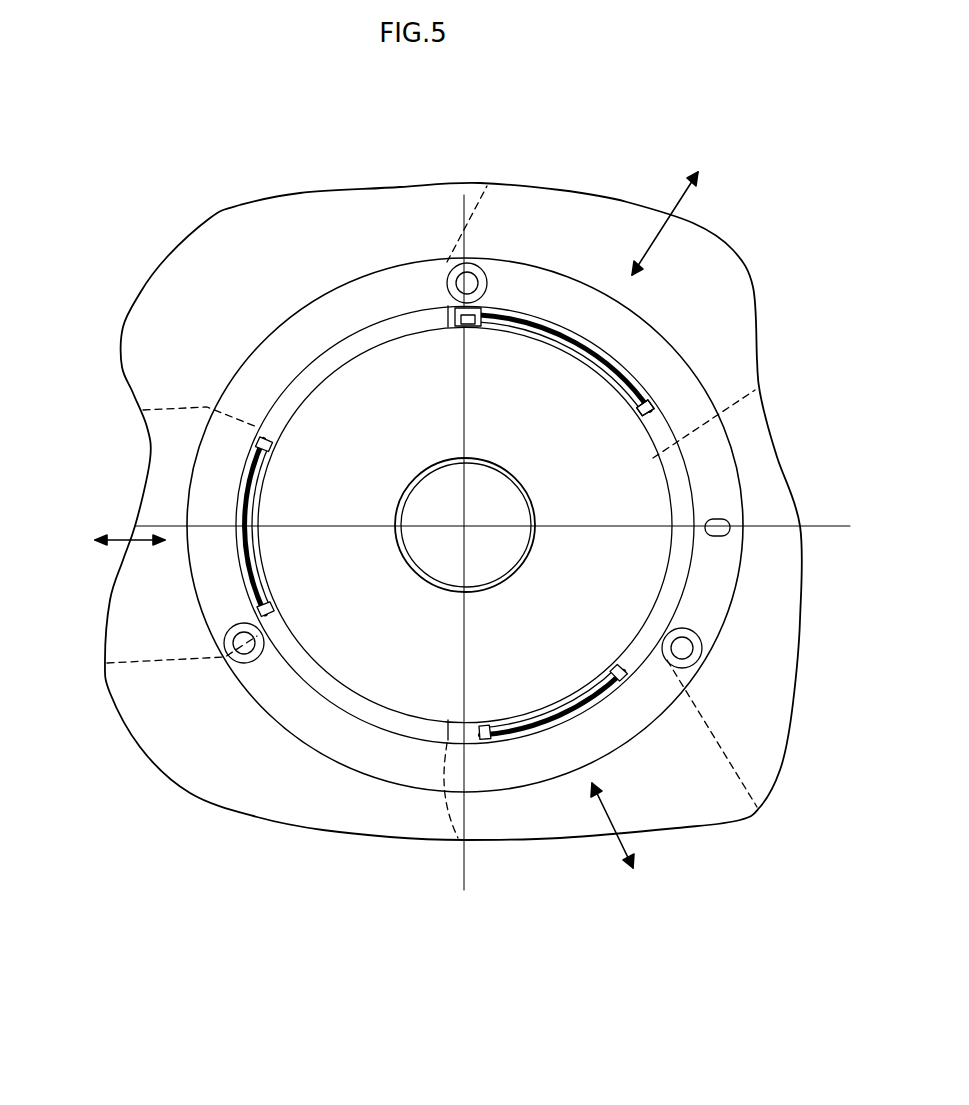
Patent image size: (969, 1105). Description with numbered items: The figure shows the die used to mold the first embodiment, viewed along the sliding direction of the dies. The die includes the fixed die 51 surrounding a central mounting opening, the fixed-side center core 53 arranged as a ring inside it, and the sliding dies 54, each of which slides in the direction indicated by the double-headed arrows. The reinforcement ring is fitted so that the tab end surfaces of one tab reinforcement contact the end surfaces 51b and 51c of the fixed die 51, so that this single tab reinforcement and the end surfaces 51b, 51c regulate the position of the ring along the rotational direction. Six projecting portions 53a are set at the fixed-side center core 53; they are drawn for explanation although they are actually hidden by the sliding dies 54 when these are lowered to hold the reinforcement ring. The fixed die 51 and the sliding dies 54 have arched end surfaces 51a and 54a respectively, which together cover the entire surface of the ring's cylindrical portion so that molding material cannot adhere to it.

The fixed die 51 is at (308, 224).
The arched end surface of fixed die 51a is at (386, 332).
The end surface of fixed die 51b is at (453, 325).
The end surface of fixed die 51c is at (660, 450).
The fixed-side center core 53 is at (643, 500).
The projecting portions 53a is at (487, 303).
The sliding dies 54 is at (605, 218).
The arched end surface of sliding die 54a is at (540, 340).